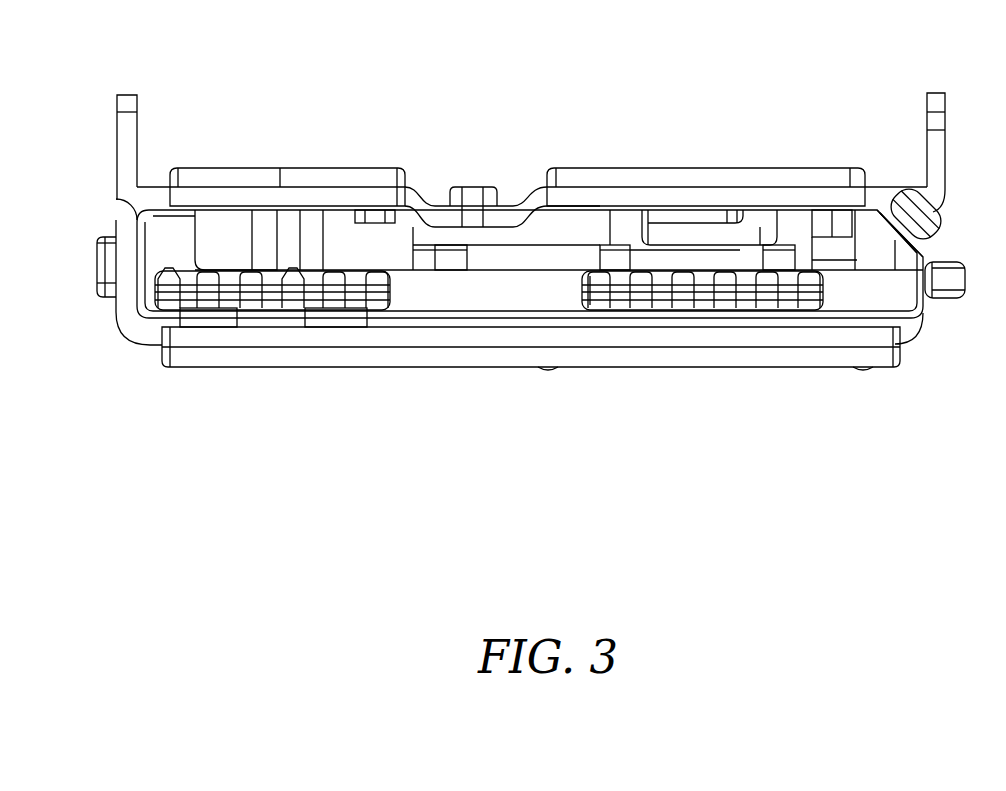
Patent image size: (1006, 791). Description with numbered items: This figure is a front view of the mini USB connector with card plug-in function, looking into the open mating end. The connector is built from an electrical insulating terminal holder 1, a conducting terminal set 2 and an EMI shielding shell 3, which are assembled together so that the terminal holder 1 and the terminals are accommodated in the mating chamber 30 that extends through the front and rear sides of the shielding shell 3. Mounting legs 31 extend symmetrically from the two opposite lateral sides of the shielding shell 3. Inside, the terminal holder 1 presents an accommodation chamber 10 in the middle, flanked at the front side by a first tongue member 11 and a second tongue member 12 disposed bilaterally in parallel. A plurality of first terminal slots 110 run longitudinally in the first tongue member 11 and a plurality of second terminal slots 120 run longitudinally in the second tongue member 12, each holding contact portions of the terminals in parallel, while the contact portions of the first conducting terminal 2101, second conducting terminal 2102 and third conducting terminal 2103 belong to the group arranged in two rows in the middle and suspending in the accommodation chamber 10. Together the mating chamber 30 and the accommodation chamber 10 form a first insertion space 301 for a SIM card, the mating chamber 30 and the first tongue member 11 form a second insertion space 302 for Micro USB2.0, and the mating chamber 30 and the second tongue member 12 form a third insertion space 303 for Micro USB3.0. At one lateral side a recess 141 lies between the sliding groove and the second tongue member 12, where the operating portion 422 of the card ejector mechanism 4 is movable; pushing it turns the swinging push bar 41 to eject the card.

The electrical insulating terminal holder 1 is at (900, 298).
The accommodation chamber 10 is at (858, 248).
The first tongue member 11 is at (807, 287).
The first terminal slots 110 is at (693, 280).
The second tongue member 12 is at (168, 297).
The second terminal slots 120 is at (222, 278).
The recess 141 is at (200, 240).
The conducting terminal set 2 is at (469, 110).
The first conducting terminal 2101 is at (450, 257).
The second conducting terminal 2102 is at (617, 257).
The third conducting terminal 2103 is at (785, 257).
The EMI shielding shell 3 is at (128, 222).
The mating chamber 30 is at (478, 321).
The first insertion space 301 is at (577, 201).
The second insertion space 302 is at (744, 275).
The third insertion space 303 is at (268, 254).
The mounting legs 31 is at (128, 140).
The card ejector mechanism 4 is at (536, 67).
The swinging push bar 41 is at (535, 257).
The operating portion 422 is at (220, 230).